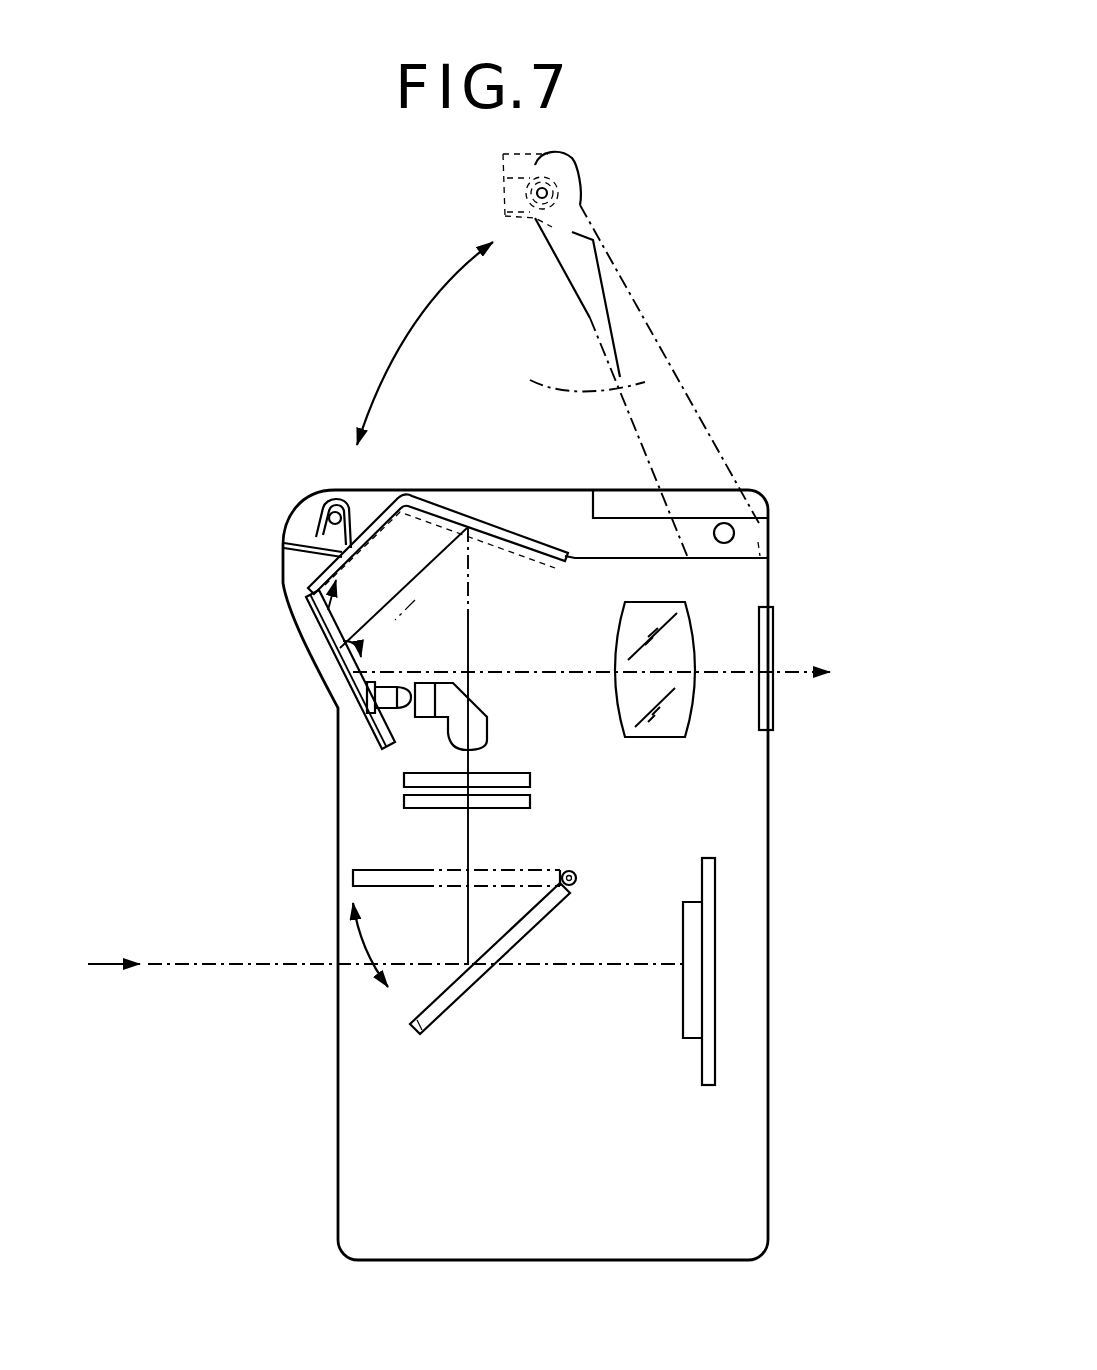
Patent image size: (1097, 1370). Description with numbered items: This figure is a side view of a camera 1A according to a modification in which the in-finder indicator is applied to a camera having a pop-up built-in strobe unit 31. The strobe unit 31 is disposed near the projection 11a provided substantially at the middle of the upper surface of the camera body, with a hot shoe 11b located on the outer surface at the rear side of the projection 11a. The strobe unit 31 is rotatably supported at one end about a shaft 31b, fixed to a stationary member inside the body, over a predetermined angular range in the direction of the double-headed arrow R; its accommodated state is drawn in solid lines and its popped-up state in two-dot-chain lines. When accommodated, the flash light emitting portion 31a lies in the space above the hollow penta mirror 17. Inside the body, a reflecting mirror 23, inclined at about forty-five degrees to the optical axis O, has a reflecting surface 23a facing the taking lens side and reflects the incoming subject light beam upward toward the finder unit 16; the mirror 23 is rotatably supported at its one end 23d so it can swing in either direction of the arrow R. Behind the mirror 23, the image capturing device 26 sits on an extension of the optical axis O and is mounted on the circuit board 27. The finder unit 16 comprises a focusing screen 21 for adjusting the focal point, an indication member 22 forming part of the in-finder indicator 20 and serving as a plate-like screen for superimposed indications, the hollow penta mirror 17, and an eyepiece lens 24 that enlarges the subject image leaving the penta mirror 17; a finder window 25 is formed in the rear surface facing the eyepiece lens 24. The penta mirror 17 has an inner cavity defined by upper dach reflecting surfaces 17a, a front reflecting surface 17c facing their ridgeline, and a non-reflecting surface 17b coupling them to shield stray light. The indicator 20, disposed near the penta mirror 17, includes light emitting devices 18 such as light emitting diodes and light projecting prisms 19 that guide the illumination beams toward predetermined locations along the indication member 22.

The camera 1A is at (838, 352).
The projection 11a is at (445, 484).
The hot shoe 11b is at (600, 490).
The finder unit 16 is at (215, 590).
The hollow penta mirror 17 is at (160, 628).
The dach reflecting surfaces 17a is at (340, 648).
The non-reflecting surface 17b is at (437, 517).
The front reflecting surface 17c is at (362, 658).
The light emitting devices 18 is at (392, 702).
The light projecting prisms 19 is at (457, 735).
The in-finder indicator 20 is at (162, 813).
The focusing screen 21 is at (410, 803).
The indication member 22 is at (407, 778).
The reflecting mirror 23 is at (467, 987).
The reflecting surface 23a is at (421, 1007).
The one end 23d is at (572, 872).
The eyepiece lens 24 is at (668, 727).
The finder window 25 is at (778, 626).
The image capturing device 26 is at (690, 947).
The circuit board 27 is at (708, 917).
The built-in strobe unit 31 is at (515, 500).
The flash light emitting portion 31a is at (597, 165).
The shaft 31b is at (725, 522).
The double-headed arrow R is at (396, 351).
The optical axis O is at (100, 962).